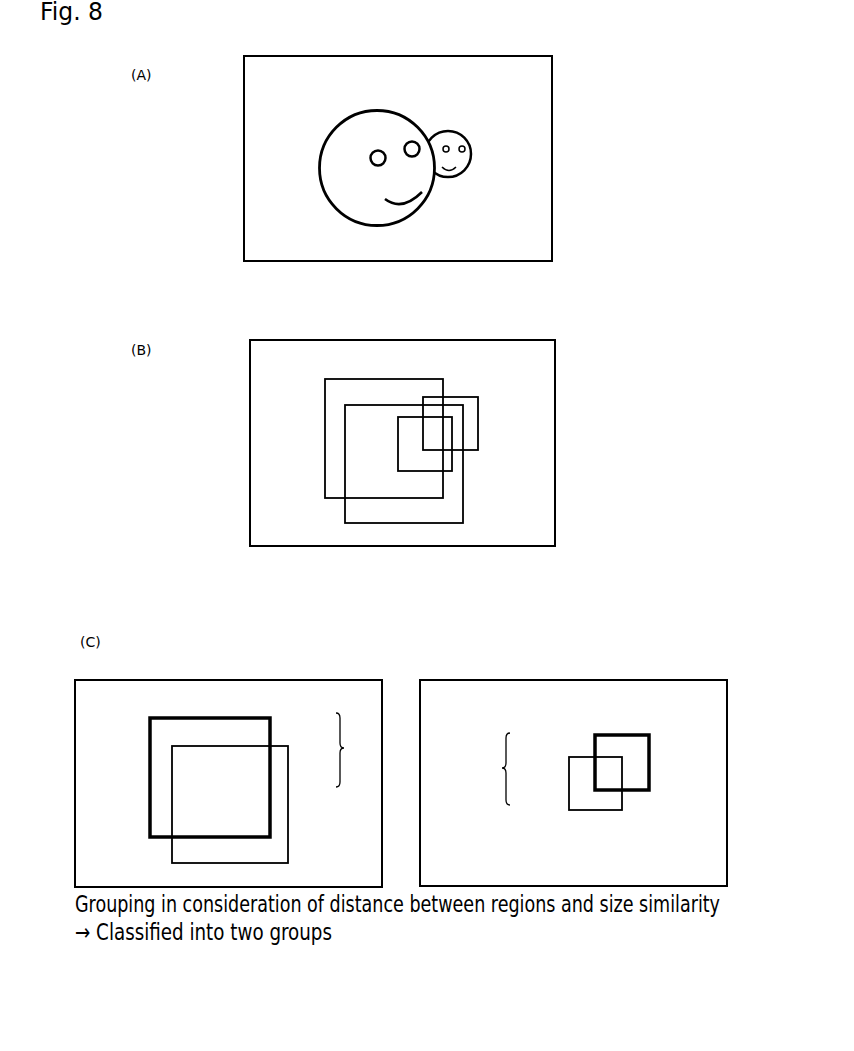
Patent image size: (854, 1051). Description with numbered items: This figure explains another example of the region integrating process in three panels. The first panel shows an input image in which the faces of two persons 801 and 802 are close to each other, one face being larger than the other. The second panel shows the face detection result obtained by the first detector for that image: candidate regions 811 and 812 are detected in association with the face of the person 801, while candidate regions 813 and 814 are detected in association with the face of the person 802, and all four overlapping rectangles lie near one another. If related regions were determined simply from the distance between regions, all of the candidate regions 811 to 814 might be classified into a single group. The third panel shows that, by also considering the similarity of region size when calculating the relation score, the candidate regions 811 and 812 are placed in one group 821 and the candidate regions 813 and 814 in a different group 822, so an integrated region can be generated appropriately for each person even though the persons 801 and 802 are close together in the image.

The person 801 is at (388, 110).
The person 802 is at (464, 135).
The candidate region 811 is at (325, 400).
The candidate region 812 is at (345, 443).
The candidate region 813 is at (478, 407).
The candidate region 814 is at (452, 463).
The group 821 is at (356, 750).
The group 822 is at (489, 769).